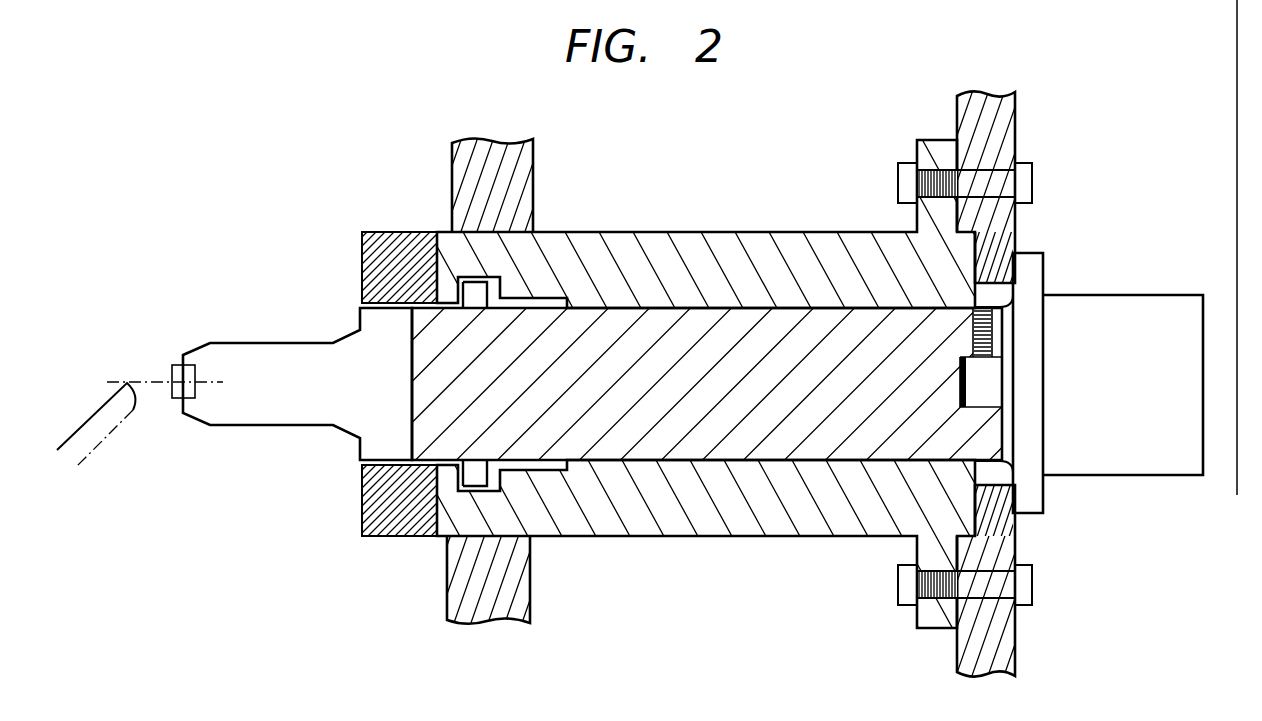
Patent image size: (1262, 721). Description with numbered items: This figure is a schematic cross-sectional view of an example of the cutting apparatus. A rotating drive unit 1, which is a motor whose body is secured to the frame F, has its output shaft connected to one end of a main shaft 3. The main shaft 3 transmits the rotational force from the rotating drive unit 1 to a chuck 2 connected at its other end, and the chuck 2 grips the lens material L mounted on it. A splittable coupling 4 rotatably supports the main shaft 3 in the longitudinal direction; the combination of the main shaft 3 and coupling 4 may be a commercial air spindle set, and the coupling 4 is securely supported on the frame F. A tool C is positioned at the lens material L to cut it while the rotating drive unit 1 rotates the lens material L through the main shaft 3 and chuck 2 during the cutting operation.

The rotating drive unit 1 is at (1120, 305).
The chuck 2 is at (315, 449).
The main shaft 3 is at (752, 440).
The splittable coupling 4 is at (480, 242).
The lens material L is at (180, 365).
The tool C is at (100, 407).
The frame F is at (997, 135).